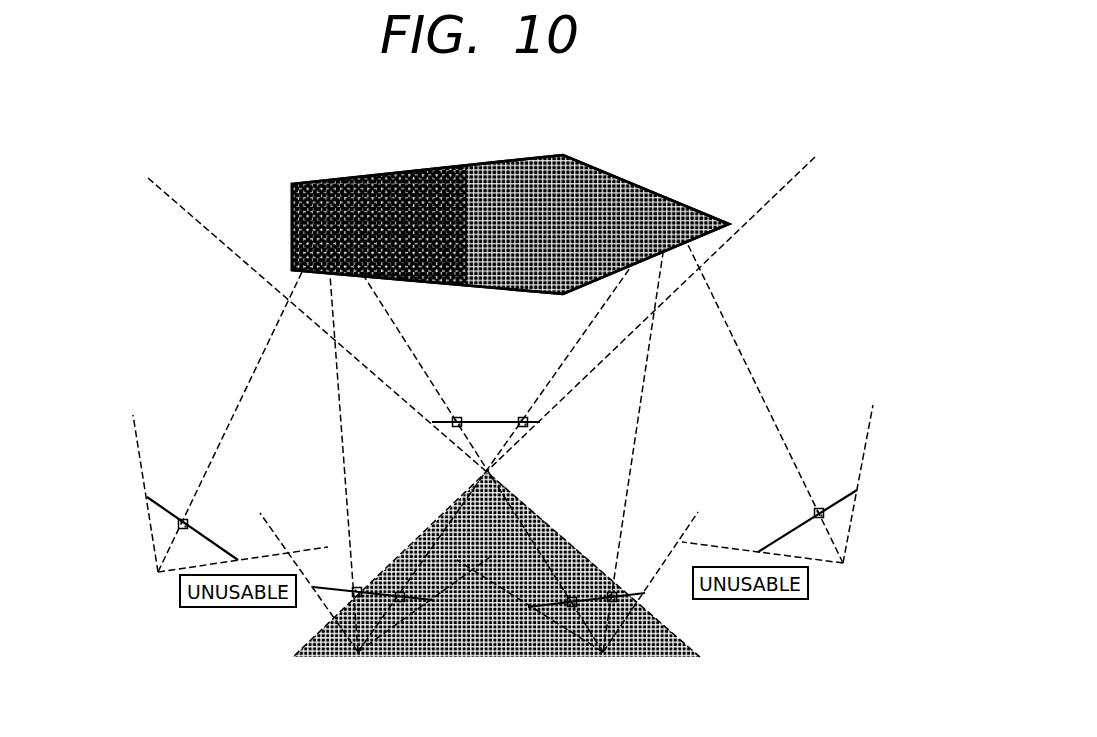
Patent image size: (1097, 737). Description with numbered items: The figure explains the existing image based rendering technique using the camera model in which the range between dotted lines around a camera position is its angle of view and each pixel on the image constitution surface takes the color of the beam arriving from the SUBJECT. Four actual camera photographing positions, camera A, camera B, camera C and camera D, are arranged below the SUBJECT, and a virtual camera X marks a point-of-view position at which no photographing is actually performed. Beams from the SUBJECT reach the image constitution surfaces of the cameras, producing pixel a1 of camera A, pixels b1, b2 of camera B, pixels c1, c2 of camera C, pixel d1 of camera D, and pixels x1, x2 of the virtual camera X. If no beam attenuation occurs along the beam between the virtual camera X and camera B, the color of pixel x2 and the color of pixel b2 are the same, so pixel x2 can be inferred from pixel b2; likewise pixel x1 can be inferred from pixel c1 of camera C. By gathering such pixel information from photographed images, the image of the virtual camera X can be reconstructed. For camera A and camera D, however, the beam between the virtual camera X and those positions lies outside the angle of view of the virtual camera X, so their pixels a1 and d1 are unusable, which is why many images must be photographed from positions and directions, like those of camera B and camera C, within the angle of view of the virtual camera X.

The subject SUBJECT is at (460, 129).
The camera A is at (230, 437).
The camera B is at (375, 475).
The camera C is at (577, 464).
The camera D is at (777, 424).
The virtual camera X is at (493, 446).
The pixel a1 is at (199, 523).
The pixel b1 is at (343, 583).
The pixel b2 is at (395, 586).
The pixel c1 is at (557, 595).
The pixel c2 is at (598, 589).
The pixel d1 is at (803, 511).
The pixel x1 is at (465, 408).
The pixel x2 is at (515, 408).